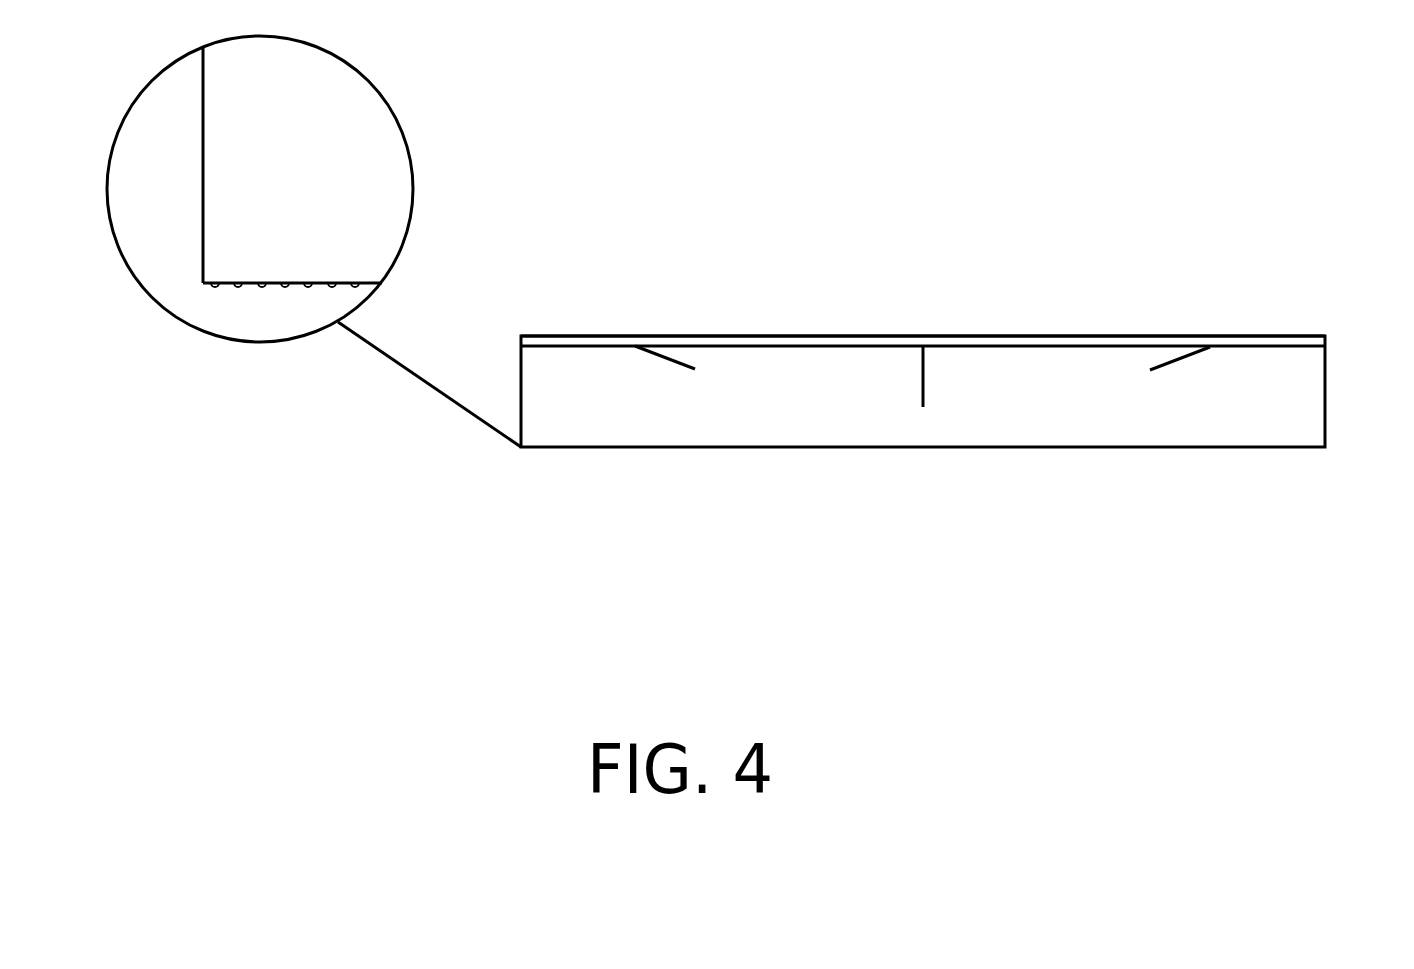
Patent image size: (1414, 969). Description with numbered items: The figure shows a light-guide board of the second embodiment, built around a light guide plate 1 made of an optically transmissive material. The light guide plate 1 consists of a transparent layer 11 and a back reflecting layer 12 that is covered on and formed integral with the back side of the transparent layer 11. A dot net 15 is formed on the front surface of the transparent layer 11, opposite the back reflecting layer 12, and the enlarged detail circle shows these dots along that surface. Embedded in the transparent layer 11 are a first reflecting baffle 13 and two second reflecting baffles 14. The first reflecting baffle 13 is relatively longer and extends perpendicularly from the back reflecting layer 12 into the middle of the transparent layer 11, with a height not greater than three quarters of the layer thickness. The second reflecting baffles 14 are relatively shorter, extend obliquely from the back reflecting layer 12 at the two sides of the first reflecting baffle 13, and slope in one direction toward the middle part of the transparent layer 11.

The light guide plate 1 is at (967, 389).
The transparent layer 11 is at (1020, 415).
The back reflecting layer 12 is at (1065, 346).
The first reflecting baffle 13 is at (918, 386).
The second reflecting baffle 14 is at (1177, 360).
The dot net 15 is at (240, 285).